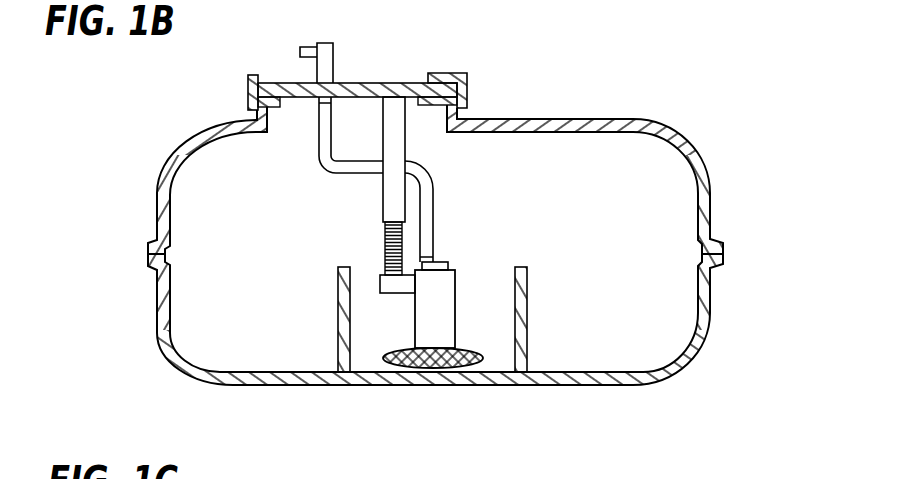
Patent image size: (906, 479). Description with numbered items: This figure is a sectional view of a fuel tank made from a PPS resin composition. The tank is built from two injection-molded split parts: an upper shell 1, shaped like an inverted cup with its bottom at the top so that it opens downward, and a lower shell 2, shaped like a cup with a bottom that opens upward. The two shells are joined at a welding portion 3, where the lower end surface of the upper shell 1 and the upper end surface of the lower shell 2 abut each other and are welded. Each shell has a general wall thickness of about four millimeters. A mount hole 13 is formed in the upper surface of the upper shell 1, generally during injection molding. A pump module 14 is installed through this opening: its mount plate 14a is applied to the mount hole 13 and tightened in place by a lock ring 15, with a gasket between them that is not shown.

The upper shell 1 is at (700, 168).
The lower shell 2 is at (697, 338).
The welding portion 3 is at (466, 225).
The mount hole 13 is at (278, 103).
The pump module 14 is at (468, 250).
The mount plate 14a is at (362, 83).
The lock ring 15 is at (248, 88).